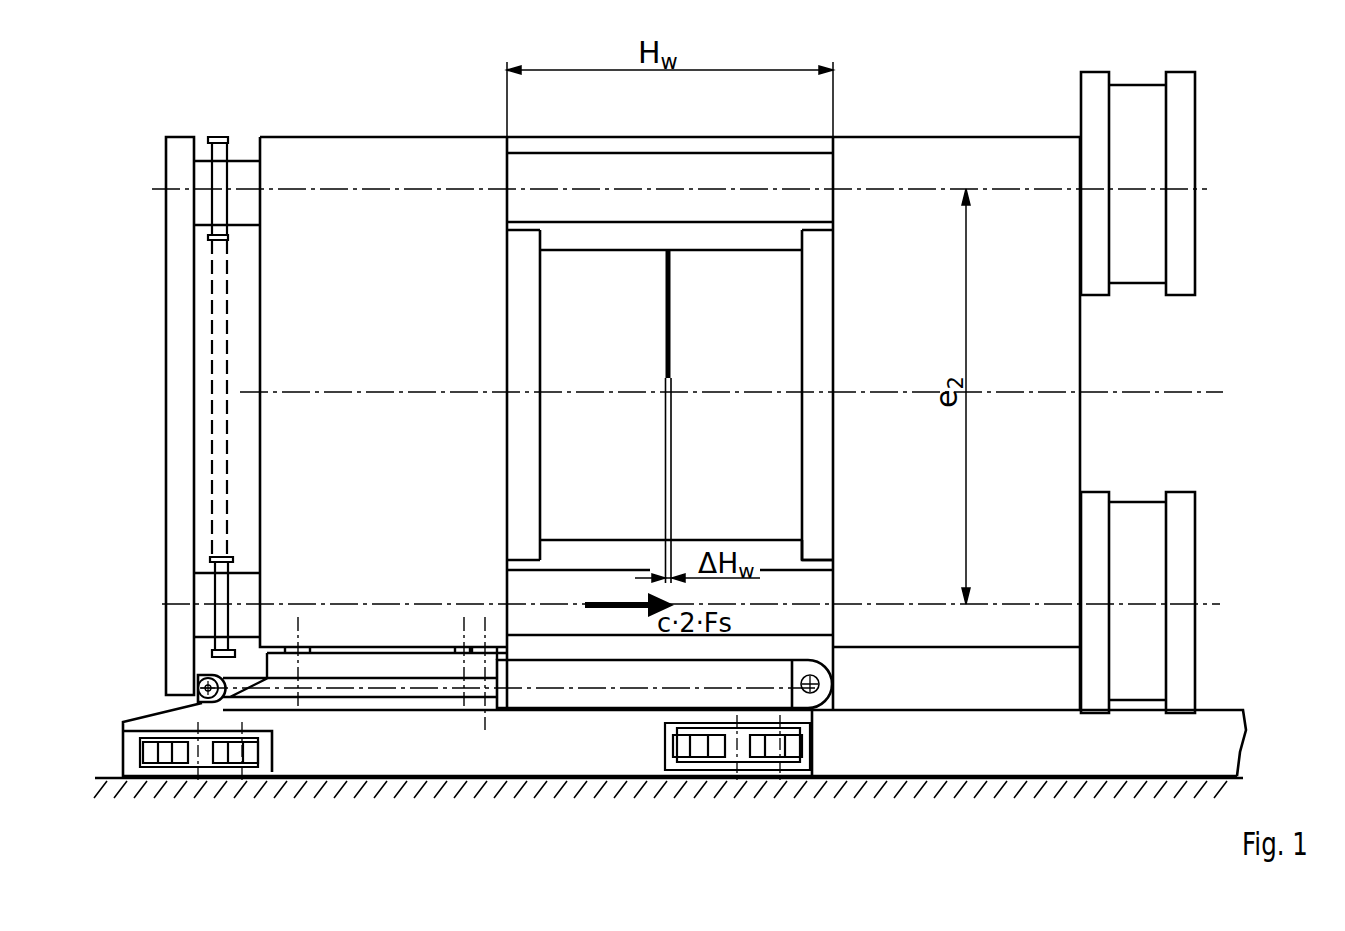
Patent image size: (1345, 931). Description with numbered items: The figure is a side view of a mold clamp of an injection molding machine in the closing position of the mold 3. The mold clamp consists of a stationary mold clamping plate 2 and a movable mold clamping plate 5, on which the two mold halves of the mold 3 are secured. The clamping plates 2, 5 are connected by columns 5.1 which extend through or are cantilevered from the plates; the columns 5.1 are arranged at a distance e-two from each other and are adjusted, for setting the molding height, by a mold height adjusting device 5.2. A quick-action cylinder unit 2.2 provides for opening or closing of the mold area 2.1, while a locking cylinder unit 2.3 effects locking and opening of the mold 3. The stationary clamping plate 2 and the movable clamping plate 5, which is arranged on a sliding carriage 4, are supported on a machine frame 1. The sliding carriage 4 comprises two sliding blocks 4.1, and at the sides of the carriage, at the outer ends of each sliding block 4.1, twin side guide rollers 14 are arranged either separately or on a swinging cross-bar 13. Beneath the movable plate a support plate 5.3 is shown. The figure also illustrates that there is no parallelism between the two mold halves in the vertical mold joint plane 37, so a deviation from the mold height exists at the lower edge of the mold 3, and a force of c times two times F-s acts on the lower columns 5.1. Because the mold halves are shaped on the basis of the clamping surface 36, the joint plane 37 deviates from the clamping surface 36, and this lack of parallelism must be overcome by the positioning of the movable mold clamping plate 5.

The machine frame 1 is at (873, 790).
The stationary mold clamping plate 2 is at (1030, 350).
The mold area 2.1 is at (710, 237).
The quick-action cylinder unit 2.2 is at (315, 694).
The locking cylinder unit 2.3 is at (1178, 145).
The mold 3 is at (587, 293).
The sliding carriage 4 is at (122, 753).
The sliding block 4.1 is at (562, 732).
The movable mold clamping plate 5 is at (353, 167).
The columns 5.1 is at (805, 177).
The mold height adjusting device 5.2 is at (218, 158).
The support plate 5.3 is at (358, 656).
The swinging cross-bar 13 is at (201, 723).
The twin side guide rollers 14 is at (762, 750).
The clamping surface 36 is at (835, 530).
The mold joint plane 37 is at (663, 453).